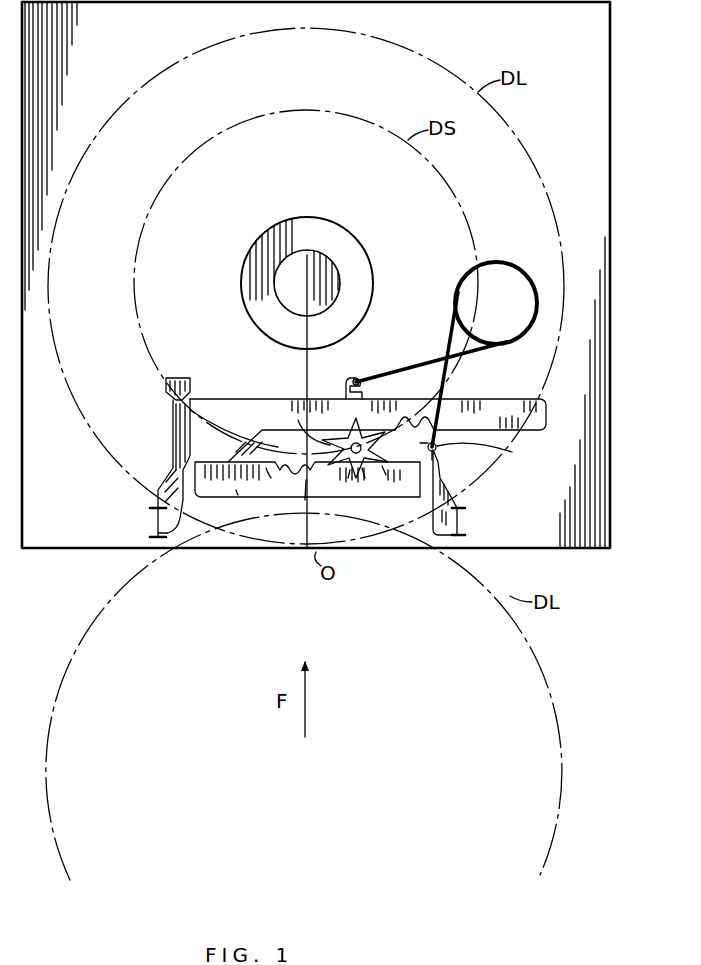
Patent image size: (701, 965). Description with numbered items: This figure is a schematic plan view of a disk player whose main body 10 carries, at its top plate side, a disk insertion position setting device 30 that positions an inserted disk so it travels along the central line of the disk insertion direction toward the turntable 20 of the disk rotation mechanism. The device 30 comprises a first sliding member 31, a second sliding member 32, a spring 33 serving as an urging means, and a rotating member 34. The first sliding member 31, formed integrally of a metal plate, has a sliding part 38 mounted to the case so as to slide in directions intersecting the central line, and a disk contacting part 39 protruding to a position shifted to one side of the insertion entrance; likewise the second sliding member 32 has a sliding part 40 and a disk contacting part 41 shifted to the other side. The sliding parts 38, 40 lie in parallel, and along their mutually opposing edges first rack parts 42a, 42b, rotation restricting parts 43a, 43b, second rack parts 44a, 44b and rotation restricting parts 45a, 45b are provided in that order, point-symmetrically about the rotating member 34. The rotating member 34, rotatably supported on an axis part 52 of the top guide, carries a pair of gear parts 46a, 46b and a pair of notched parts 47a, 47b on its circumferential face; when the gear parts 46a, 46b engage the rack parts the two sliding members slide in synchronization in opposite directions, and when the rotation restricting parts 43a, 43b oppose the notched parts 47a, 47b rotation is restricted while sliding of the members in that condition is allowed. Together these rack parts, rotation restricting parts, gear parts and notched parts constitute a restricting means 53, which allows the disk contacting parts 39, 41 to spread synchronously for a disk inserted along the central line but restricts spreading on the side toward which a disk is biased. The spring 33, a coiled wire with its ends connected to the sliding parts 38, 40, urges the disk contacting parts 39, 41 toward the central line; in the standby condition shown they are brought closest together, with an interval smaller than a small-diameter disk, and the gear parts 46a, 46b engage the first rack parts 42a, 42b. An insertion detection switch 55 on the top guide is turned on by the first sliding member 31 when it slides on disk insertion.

The main body 10 is at (610, 43).
The turntable 20 is at (307, 217).
The disk insertion position setting device 30 is at (125, 480).
The first sliding member 31 is at (168, 427).
The second sliding member 32 is at (460, 493).
The spring 33 is at (487, 262).
The rotating member 34 is at (327, 445).
The sliding part 38 is at (517, 400).
The disk contacting part 39 is at (160, 537).
The sliding part 40 is at (214, 492).
The disk contacting part 41 is at (438, 545).
The first rack part 42a is at (345, 430).
The first rack part 42b is at (365, 478).
The rotation restricting part 43a is at (378, 396).
The rotation restricting part 43b is at (348, 478).
The second rack part 44a is at (409, 432).
The second rack part 44b is at (271, 478).
The rotation restricting part 45a is at (478, 430).
The rotation restricting part 45b is at (238, 495).
The gear part 46a is at (298, 420).
The gear part 46b is at (386, 475).
The notched part 47a is at (508, 451).
The notched part 47b is at (305, 500).
The axis part 52 is at (434, 455).
The restricting means 53 is at (283, 446).
The insertion detection switch 55 is at (176, 378).